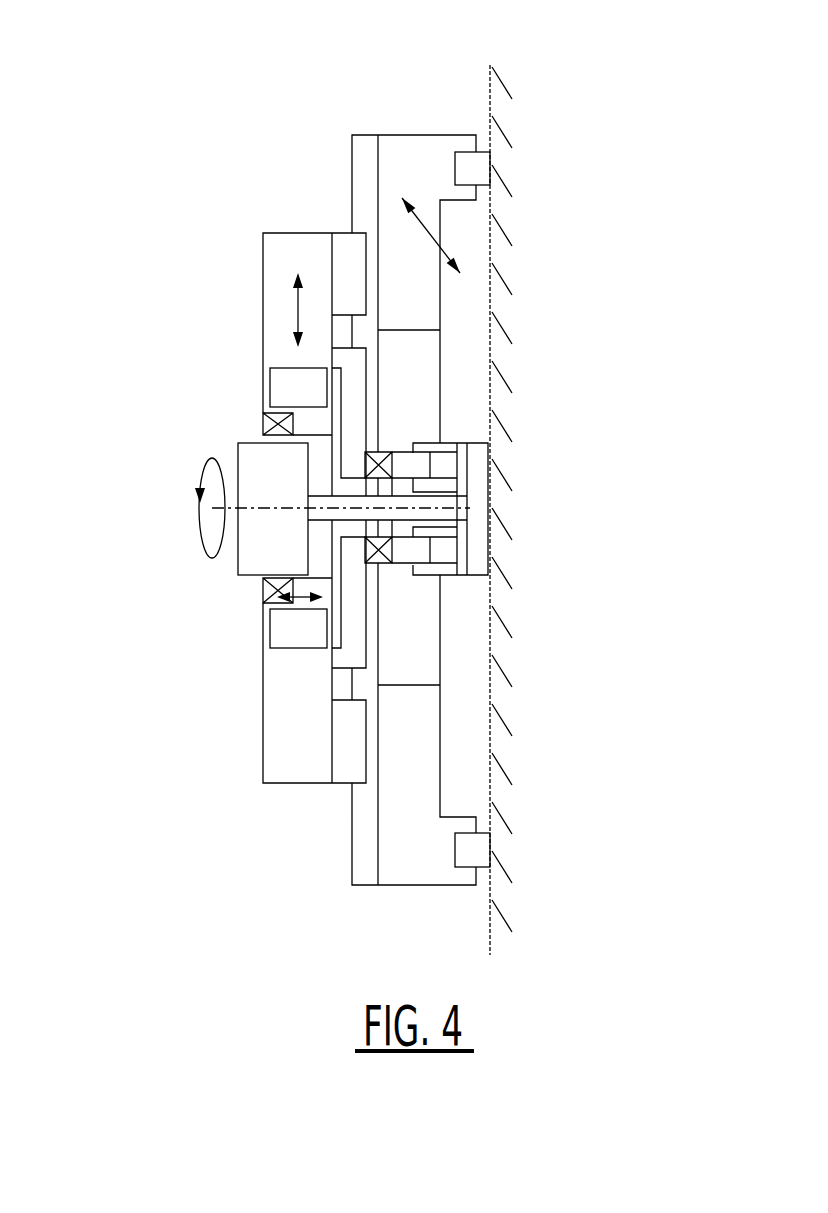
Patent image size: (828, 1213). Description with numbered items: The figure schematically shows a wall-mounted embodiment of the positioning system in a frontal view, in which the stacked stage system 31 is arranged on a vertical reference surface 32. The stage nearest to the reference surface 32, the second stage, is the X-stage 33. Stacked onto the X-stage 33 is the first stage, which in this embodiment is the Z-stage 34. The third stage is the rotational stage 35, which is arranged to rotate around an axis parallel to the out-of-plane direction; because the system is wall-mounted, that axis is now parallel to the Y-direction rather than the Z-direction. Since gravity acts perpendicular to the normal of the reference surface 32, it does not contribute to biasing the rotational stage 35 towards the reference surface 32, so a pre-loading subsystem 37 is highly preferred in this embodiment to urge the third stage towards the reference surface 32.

The stacked stage system 31 is at (200, 160).
The vertical reference surface 32 is at (490, 100).
The X-stage 33 is at (417, 133).
The Z-stage 34 is at (293, 232).
The rotational stage 35 is at (215, 508).
The pre-loading subsystem 37 is at (474, 602).